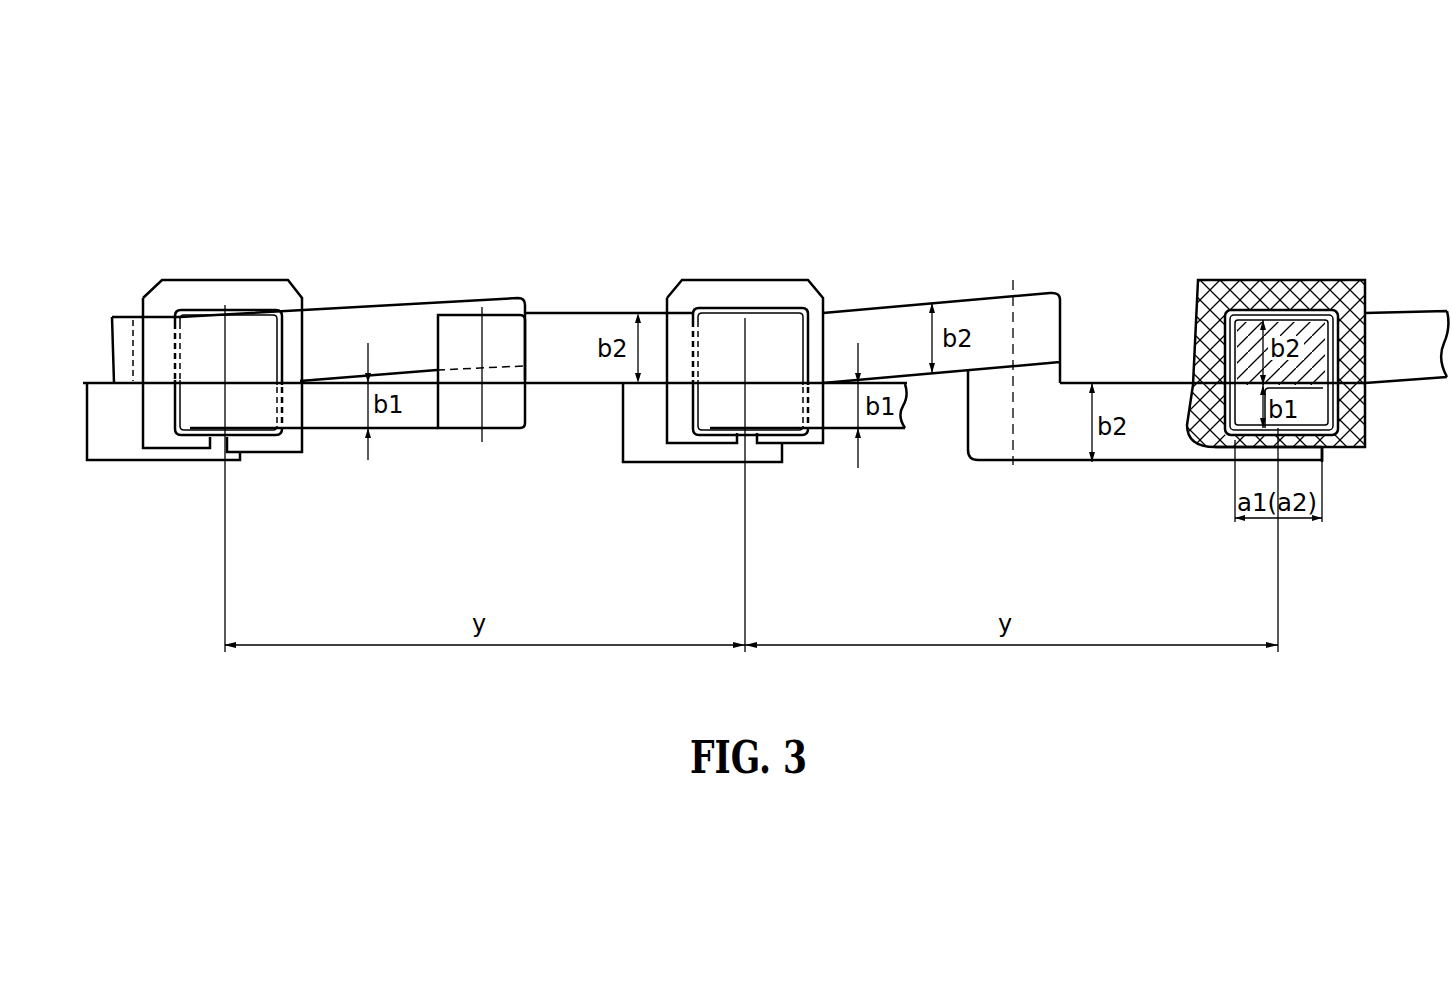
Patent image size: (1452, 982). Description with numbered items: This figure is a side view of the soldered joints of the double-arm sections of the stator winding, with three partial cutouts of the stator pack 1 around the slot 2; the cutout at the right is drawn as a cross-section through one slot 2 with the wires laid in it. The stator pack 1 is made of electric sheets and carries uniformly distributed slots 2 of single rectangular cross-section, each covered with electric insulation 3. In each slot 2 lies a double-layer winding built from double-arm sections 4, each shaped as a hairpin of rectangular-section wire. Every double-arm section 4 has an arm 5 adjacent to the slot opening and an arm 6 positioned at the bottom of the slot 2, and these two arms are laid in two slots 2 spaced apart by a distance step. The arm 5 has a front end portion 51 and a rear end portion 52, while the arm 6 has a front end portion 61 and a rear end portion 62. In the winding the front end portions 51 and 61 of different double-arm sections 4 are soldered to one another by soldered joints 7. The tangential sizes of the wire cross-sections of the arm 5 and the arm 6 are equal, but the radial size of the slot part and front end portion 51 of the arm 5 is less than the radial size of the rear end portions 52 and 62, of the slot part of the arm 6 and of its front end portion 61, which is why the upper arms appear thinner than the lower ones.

The stator pack 1 is at (175, 292).
The slot 2 is at (223, 303).
The electric insulation 3 is at (267, 313).
The double-arm section 4 is at (1043, 270).
The arm adjacent to opening 5 is at (1323, 450).
The arm positioned at the bottom of the slot 6 is at (1247, 365).
The soldered joint 7 is at (497, 380).
The front end portion 51 is at (330, 408).
The rear end portion 52 is at (112, 413).
The front end portion 61 is at (122, 343).
The rear end portion 62 is at (412, 338).